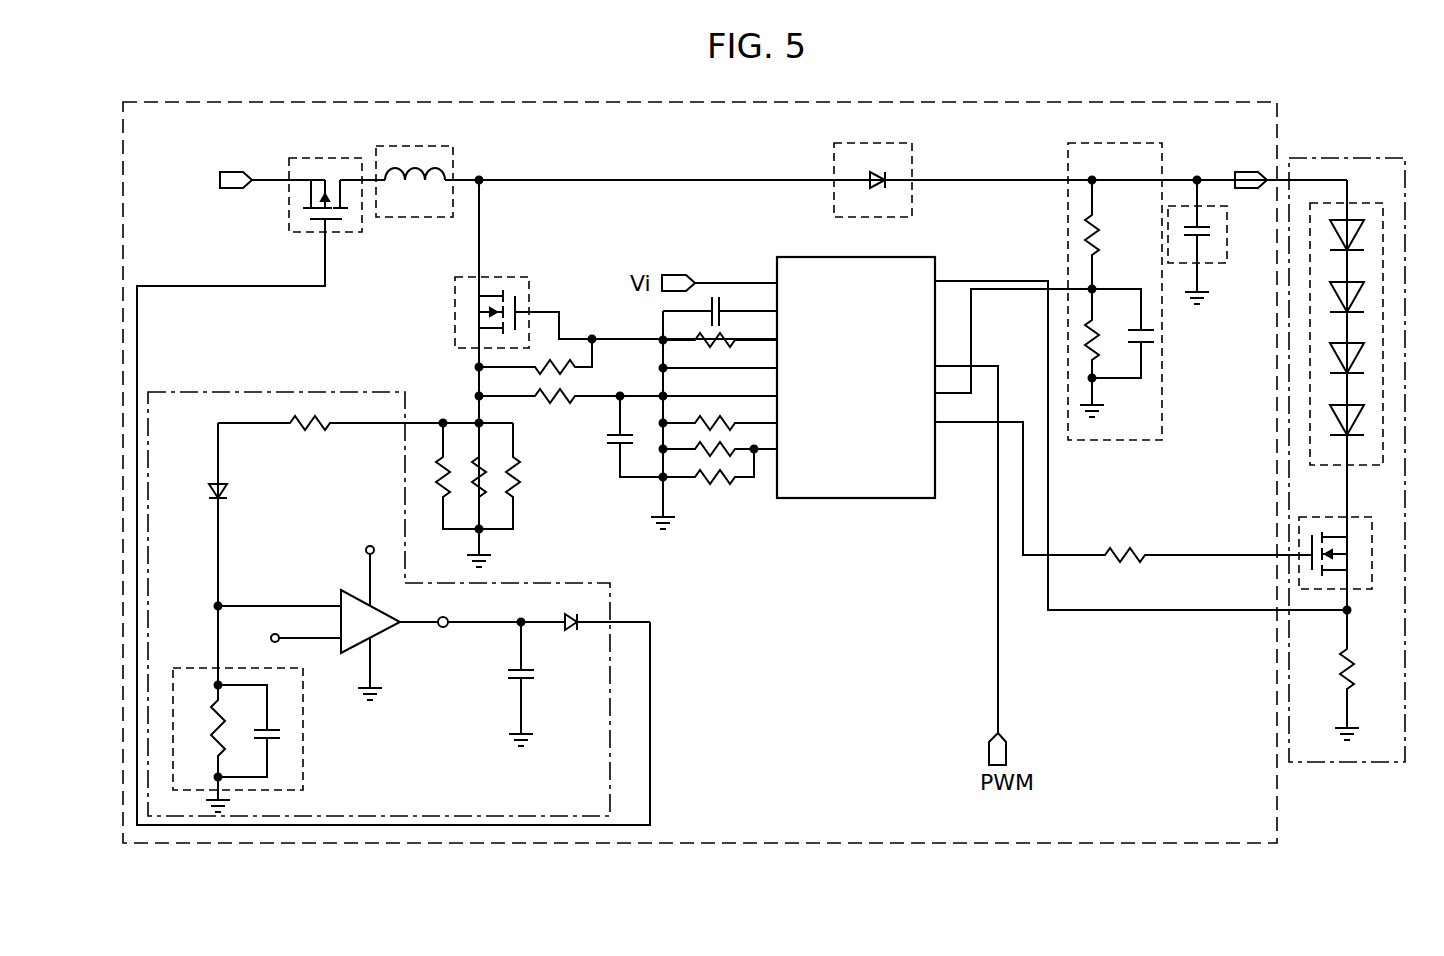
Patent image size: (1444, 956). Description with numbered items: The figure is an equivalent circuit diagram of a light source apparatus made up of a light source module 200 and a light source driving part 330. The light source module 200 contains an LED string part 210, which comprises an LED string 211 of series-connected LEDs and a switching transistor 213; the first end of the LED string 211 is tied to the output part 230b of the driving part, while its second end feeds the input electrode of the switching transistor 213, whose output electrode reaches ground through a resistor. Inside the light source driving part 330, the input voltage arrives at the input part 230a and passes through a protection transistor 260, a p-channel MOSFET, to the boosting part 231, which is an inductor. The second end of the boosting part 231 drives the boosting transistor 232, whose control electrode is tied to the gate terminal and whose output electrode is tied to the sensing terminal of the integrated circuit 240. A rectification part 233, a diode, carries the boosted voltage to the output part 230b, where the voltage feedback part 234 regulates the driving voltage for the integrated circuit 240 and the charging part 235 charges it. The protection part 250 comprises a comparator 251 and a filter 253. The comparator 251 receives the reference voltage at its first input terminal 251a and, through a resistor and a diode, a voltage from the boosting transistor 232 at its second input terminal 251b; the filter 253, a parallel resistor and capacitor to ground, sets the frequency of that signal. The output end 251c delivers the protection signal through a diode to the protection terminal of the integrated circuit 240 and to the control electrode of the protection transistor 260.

The light source driving part 330 is at (543, 102).
The input part 230a is at (230, 172).
The output part 230b is at (1245, 172).
The protection transistor 260 is at (290, 221).
The boosting part 231 is at (456, 152).
The boosting transistor 232 is at (455, 320).
The rectification part 233 is at (834, 208).
The voltage feedback part 234 is at (1068, 208).
The charging part 235 is at (1216, 264).
The integrated circuit 240 is at (855, 500).
The protection part 250 is at (211, 392).
The comparator 251 is at (391, 610).
The first input terminal 251a is at (308, 638).
The second input terminal 251b is at (252, 606).
The output end 251c is at (445, 628).
The filter 253 is at (303, 758).
The light source module 200 is at (1377, 158).
The LED string part 210 is at (1210, 430).
The LED string 211 is at (1310, 437).
The switching transistor 213 is at (1312, 517).